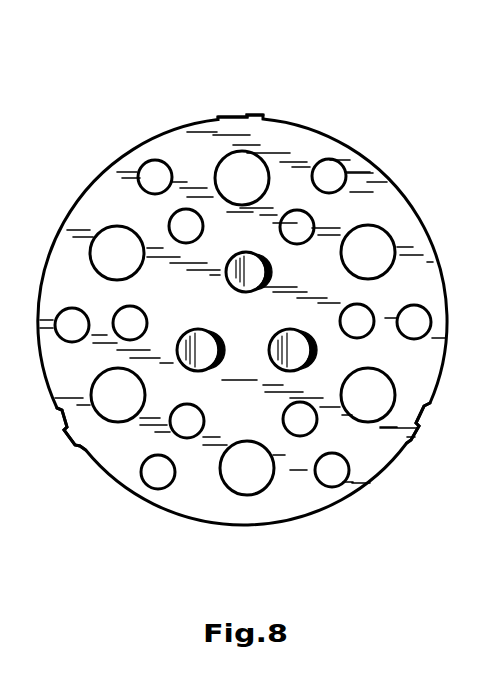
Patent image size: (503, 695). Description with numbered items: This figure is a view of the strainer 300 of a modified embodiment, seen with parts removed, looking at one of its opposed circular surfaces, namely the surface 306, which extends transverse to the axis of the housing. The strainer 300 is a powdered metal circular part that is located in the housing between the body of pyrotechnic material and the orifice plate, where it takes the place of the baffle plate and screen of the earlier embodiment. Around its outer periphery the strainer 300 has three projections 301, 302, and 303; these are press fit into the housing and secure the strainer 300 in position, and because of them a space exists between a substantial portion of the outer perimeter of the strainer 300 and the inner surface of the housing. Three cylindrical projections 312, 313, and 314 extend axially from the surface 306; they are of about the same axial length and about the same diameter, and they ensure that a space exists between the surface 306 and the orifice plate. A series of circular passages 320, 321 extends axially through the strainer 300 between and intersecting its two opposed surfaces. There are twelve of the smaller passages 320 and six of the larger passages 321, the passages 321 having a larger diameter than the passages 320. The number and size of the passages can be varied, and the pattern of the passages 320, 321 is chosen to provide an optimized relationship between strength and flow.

The strainer 300 is at (192, 104).
The projection 301 is at (249, 116).
The projection 302 is at (63, 432).
The projection 303 is at (426, 424).
The circular surface 306 is at (378, 198).
The projection 312 is at (254, 265).
The projection 313 is at (198, 342).
The projection 314 is at (291, 351).
The passages 320 is at (188, 222).
The passages 321 is at (110, 247).